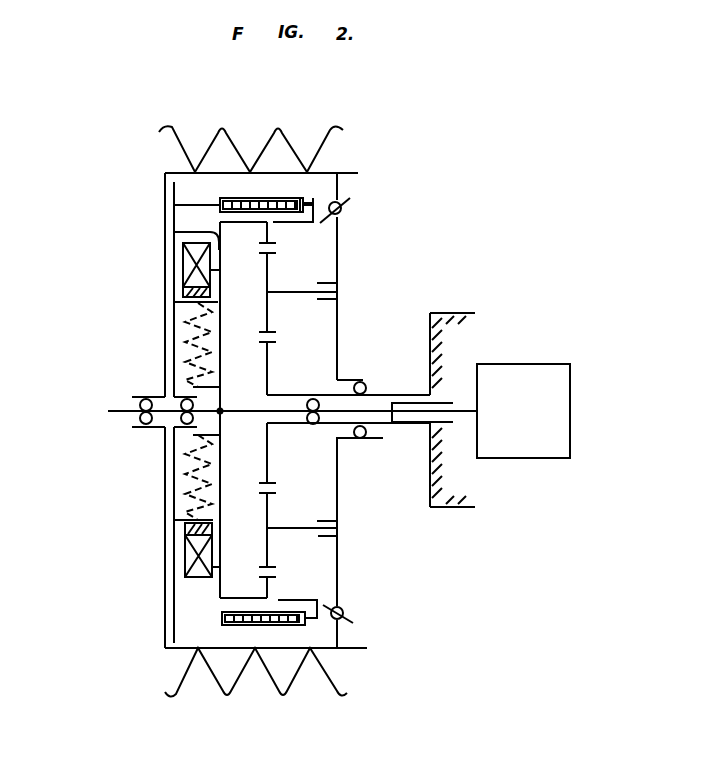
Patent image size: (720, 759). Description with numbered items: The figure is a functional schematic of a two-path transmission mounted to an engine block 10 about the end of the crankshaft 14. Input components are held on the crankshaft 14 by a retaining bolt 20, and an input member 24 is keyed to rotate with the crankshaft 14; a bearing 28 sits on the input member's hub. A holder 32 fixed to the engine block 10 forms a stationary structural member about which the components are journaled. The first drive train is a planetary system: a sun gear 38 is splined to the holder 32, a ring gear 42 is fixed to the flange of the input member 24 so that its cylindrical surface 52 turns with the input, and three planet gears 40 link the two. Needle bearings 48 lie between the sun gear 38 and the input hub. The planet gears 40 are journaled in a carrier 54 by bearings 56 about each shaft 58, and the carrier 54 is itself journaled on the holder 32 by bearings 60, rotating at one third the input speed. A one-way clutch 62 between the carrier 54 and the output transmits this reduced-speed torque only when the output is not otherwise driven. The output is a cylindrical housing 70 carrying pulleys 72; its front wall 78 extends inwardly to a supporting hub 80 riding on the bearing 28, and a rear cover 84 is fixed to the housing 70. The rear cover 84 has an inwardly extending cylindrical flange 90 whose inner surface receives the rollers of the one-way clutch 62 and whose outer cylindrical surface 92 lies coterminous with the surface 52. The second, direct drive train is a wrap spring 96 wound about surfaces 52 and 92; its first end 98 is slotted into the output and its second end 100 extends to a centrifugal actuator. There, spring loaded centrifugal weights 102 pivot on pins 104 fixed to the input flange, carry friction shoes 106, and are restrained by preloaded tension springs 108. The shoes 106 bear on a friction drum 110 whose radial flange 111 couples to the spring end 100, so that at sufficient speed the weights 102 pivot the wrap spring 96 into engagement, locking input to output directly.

The engine block 10 is at (460, 313).
The crankshaft 14 is at (527, 364).
The retaining bolt 20 is at (375, 437).
The input member 24 is at (222, 320).
The bearing 28 is at (140, 418).
The holder 32 is at (412, 425).
The sun gear 38 is at (270, 355).
The planet gears 40 is at (270, 270).
The ring gear 42 is at (270, 243).
The needle bearings 48 is at (308, 427).
The cylindrical surface 52 is at (220, 128).
The carrier 54 is at (340, 305).
The bearings 56 is at (320, 521).
The shaft 58 is at (302, 294).
The bearings 60 is at (364, 384).
The one-way clutch 62 is at (352, 200).
The cylindrical housing 70 is at (299, 195).
The pulleys 72 is at (165, 130).
The front wall 78 is at (163, 212).
The supporting hub 80 is at (143, 400).
The rear cover 84 is at (305, 183).
The cylindrical flange 90 is at (345, 213).
The outer cylindrical surface 92 is at (305, 180).
The wrap spring 96 is at (264, 198).
The first end 98 is at (308, 193).
The second end 100 is at (205, 203).
The centrifugal weights 102 is at (183, 266).
The pins 104 is at (178, 235).
The friction shoes 106 is at (167, 302).
The tension springs 108 is at (170, 358).
The friction drum 110 is at (178, 323).
The radial flange 111 is at (185, 565).